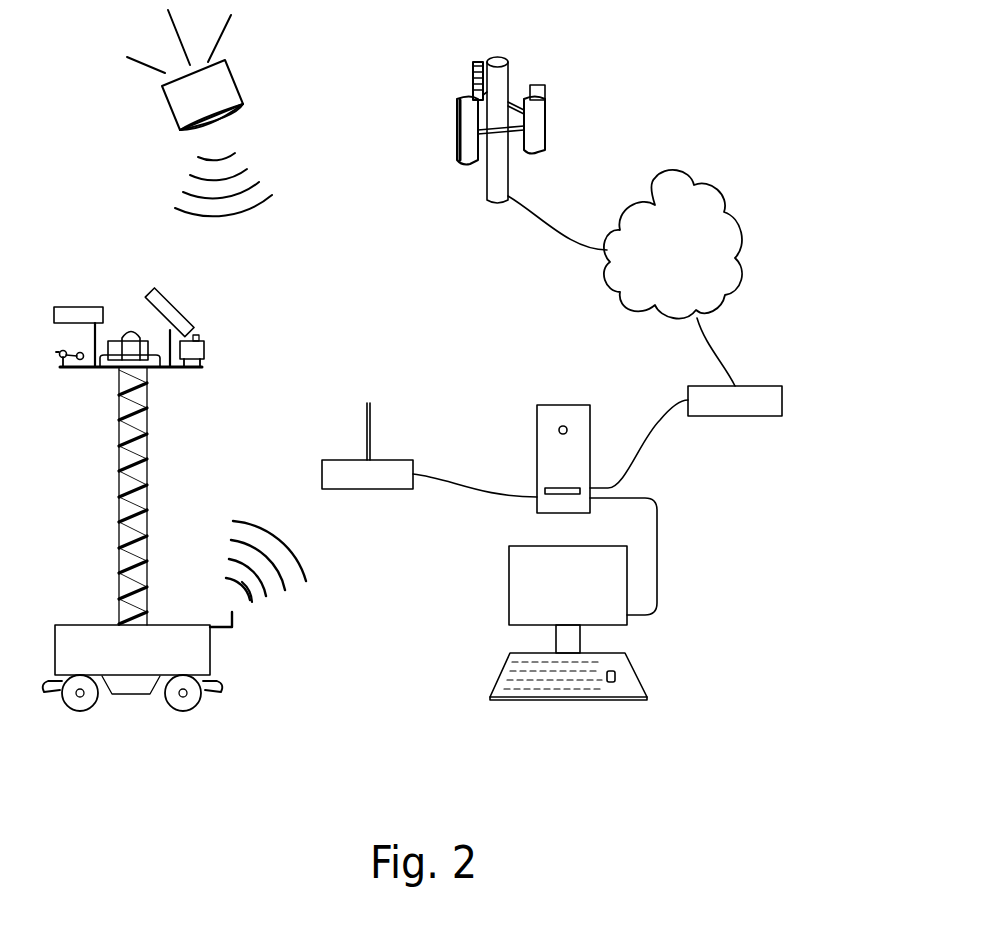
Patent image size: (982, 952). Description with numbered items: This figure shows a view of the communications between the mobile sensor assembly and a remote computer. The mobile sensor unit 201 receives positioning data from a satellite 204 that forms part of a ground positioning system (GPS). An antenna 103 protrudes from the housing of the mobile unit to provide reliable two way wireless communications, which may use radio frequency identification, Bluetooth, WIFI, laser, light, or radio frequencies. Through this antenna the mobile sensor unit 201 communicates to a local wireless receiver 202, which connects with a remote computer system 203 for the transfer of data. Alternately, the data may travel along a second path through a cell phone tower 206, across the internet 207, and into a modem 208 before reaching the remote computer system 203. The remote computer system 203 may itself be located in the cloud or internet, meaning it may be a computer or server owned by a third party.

The mobile sensor unit 201 is at (242, 732).
The antenna 103 is at (240, 623).
The local wireless receiver 202 is at (395, 455).
The remote computer system 203 is at (565, 400).
The satellite 204 is at (243, 113).
The cell phone tower 206 is at (530, 72).
The internet 207 is at (672, 165).
The modem 208 is at (768, 375).